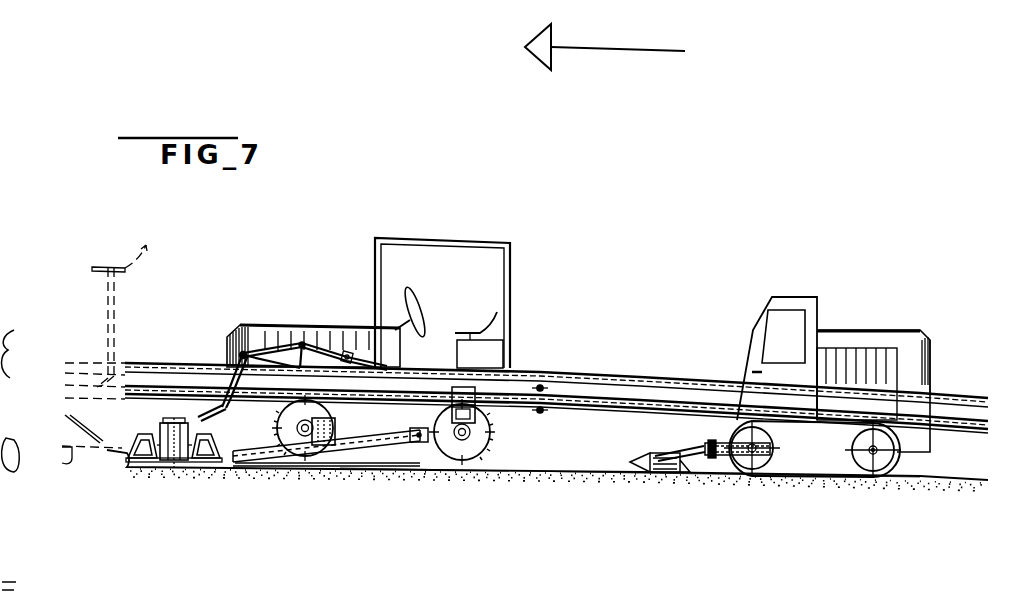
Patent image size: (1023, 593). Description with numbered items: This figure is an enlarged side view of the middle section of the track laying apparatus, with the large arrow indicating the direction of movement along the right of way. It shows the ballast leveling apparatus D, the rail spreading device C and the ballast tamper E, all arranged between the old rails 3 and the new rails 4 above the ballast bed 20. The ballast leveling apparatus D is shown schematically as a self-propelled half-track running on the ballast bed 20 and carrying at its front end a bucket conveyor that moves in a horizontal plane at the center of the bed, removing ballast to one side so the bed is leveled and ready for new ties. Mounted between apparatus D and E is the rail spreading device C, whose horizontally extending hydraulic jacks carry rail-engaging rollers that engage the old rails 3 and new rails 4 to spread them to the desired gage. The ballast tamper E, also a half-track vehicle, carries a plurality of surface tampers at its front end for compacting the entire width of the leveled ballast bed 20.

The old rails 3 is at (572, 384).
The new rails 4 is at (594, 412).
The ballast bed 20 is at (534, 482).
The ballast leveling apparatus D is at (313, 322).
The rail spreading device C is at (541, 366).
The ballast tamper E is at (780, 387).